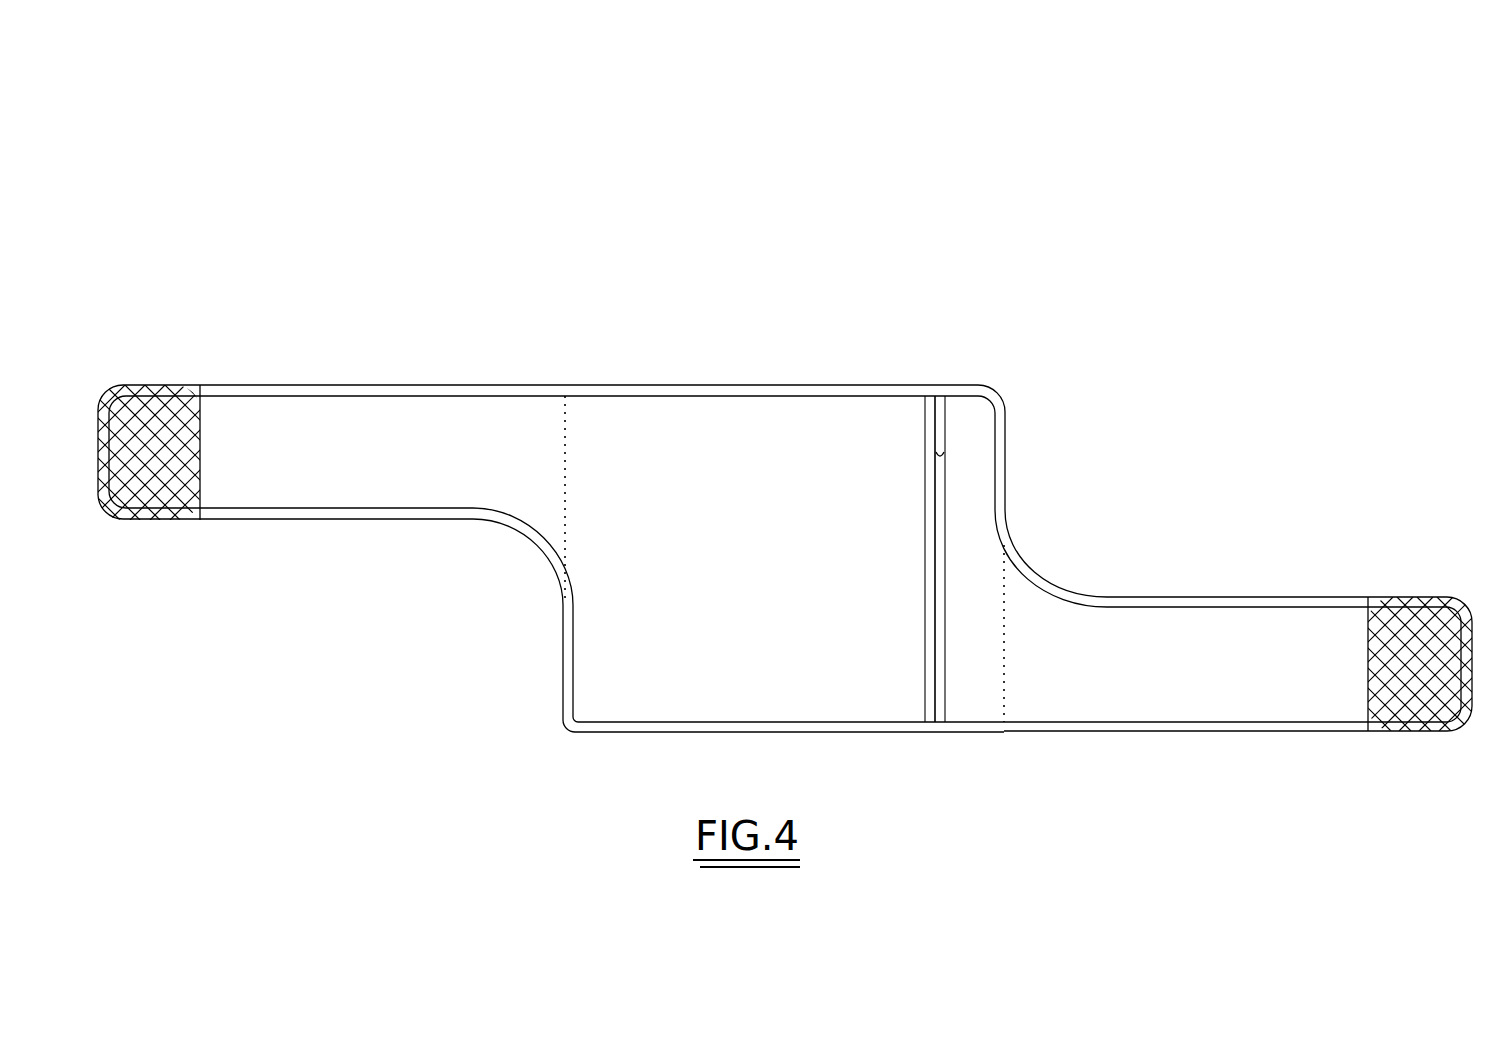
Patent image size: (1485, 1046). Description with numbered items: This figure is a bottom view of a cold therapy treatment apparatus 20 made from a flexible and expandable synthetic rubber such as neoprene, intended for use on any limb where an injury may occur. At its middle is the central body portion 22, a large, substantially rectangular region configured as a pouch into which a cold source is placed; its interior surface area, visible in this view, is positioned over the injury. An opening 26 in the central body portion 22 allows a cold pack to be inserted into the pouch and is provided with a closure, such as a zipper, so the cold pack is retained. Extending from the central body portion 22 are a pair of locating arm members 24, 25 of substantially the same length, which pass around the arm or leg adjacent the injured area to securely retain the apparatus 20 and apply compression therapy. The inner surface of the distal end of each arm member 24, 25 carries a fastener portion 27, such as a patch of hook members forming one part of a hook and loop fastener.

The cold therapy treatment apparatus 20 is at (1048, 304).
The central body portion 22 is at (782, 570).
The locating arm member 24 is at (1170, 600).
The locating arm member 25 is at (300, 420).
The opening 26 is at (945, 458).
The fastener portion 27 is at (172, 388).